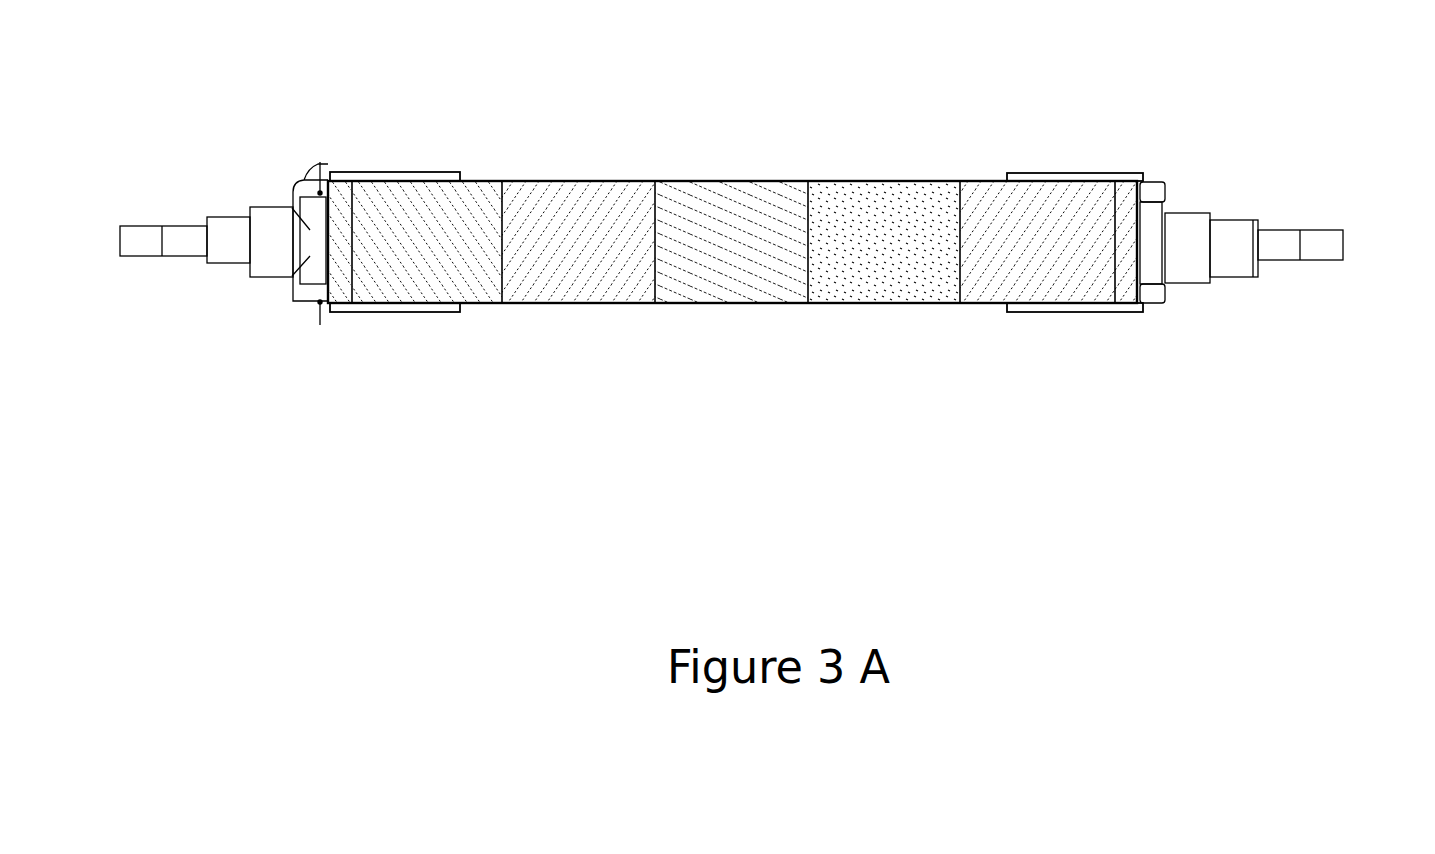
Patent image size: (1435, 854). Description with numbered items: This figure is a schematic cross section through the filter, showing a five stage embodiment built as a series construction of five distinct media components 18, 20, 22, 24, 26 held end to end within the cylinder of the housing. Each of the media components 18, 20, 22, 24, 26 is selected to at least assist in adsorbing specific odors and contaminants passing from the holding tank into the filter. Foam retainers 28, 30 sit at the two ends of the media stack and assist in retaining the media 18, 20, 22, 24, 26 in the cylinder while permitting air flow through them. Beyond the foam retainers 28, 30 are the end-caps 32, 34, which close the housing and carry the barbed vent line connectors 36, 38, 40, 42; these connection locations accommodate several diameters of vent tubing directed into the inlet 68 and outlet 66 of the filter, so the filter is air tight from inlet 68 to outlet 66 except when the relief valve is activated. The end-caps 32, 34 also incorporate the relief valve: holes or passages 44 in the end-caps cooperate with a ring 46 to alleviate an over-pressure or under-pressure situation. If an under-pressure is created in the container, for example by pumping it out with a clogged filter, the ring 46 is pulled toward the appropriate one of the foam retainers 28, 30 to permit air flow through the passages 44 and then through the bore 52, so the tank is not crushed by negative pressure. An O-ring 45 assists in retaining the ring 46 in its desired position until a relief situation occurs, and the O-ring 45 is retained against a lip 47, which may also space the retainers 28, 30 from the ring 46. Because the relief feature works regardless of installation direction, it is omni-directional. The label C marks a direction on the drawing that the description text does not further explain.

The media component 18 is at (468, 216).
The media component 20 is at (579, 296).
The media component 22 is at (748, 214).
The media component 24 is at (881, 294).
The media component 26 is at (1003, 173).
The foam retainer 28 is at (333, 184).
The foam retainer 30 is at (1128, 298).
The end-cap 32 is at (395, 314).
The end-cap 34 is at (1092, 170).
The barbed vent line connector 36 is at (1200, 204).
The barbed vent line connector 38 is at (1241, 273).
The barbed vent line connector 40 is at (1282, 223).
The barbed vent line connector 42 is at (1331, 263).
The passages 44 is at (292, 189).
The O-ring 45 is at (293, 172).
The ring 46 is at (320, 165).
The lip 47 is at (320, 322).
The bore 52 is at (200, 220).
The outlet 66 is at (1350, 247).
The inlet 68 is at (114, 242).
The section direction arrow C is at (338, 161).